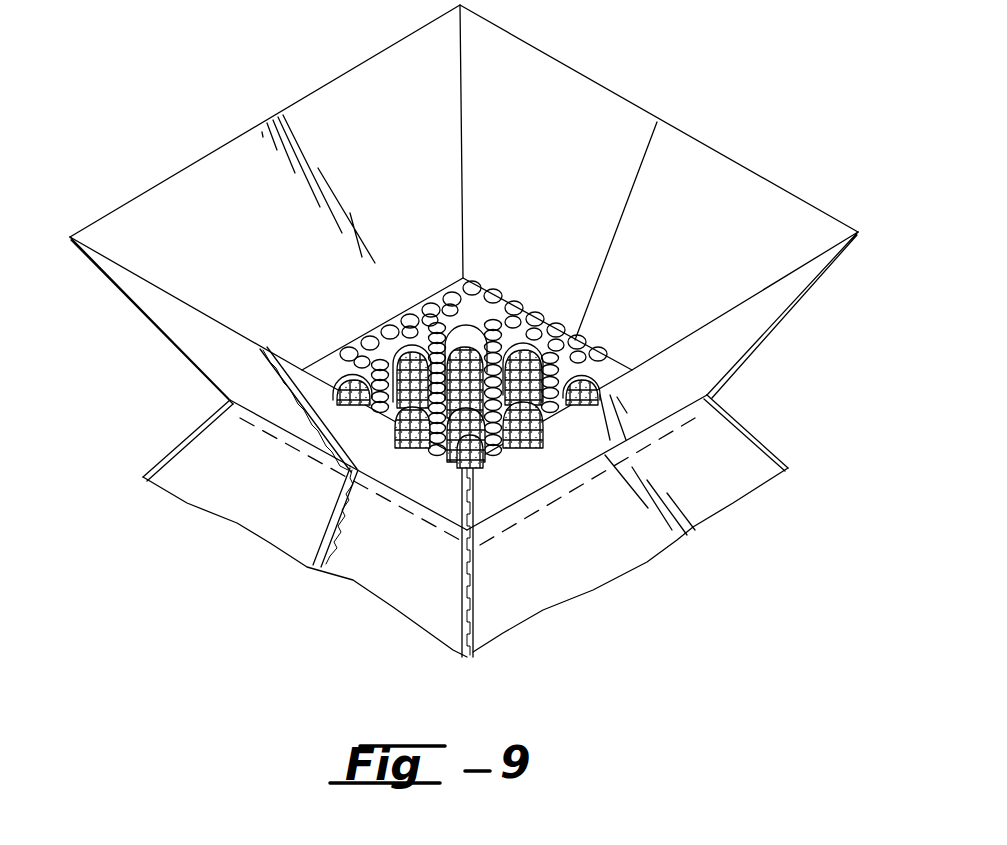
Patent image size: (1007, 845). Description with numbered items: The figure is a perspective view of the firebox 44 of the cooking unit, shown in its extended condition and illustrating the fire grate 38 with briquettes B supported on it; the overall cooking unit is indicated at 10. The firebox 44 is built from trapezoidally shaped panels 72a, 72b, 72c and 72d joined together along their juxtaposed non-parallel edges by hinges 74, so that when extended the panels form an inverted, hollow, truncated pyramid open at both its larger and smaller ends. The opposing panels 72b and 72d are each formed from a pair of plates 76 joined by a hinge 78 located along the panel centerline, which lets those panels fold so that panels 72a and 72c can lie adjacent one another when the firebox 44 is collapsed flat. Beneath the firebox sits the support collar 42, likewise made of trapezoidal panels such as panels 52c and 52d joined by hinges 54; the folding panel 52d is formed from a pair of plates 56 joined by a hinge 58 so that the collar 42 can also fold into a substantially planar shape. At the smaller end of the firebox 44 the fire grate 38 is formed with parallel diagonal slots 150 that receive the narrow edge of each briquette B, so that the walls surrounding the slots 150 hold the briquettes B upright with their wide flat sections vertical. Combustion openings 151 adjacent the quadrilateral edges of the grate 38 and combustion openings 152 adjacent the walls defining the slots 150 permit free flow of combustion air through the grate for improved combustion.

The hopper 10 is at (789, 162).
The fire grate 38 is at (566, 322).
The support collar 42 is at (646, 578).
The firebox 44 is at (824, 206).
The panel 52c is at (730, 486).
The panel 52d is at (226, 496).
The hinge 54 is at (145, 472).
The plate 56 is at (350, 570).
The hinge 58 is at (332, 543).
The panel 72a is at (192, 202).
The panel 72b is at (619, 117).
The panel 72c is at (782, 344).
The panel 72d is at (195, 326).
The hinge 74 is at (812, 290).
The plate 76 is at (648, 185).
The hinge 78 is at (320, 447).
The slot 150 is at (456, 350).
The combustion opening 151 is at (445, 295).
The combustion opening 152 is at (560, 380).
The briquette B is at (398, 360).